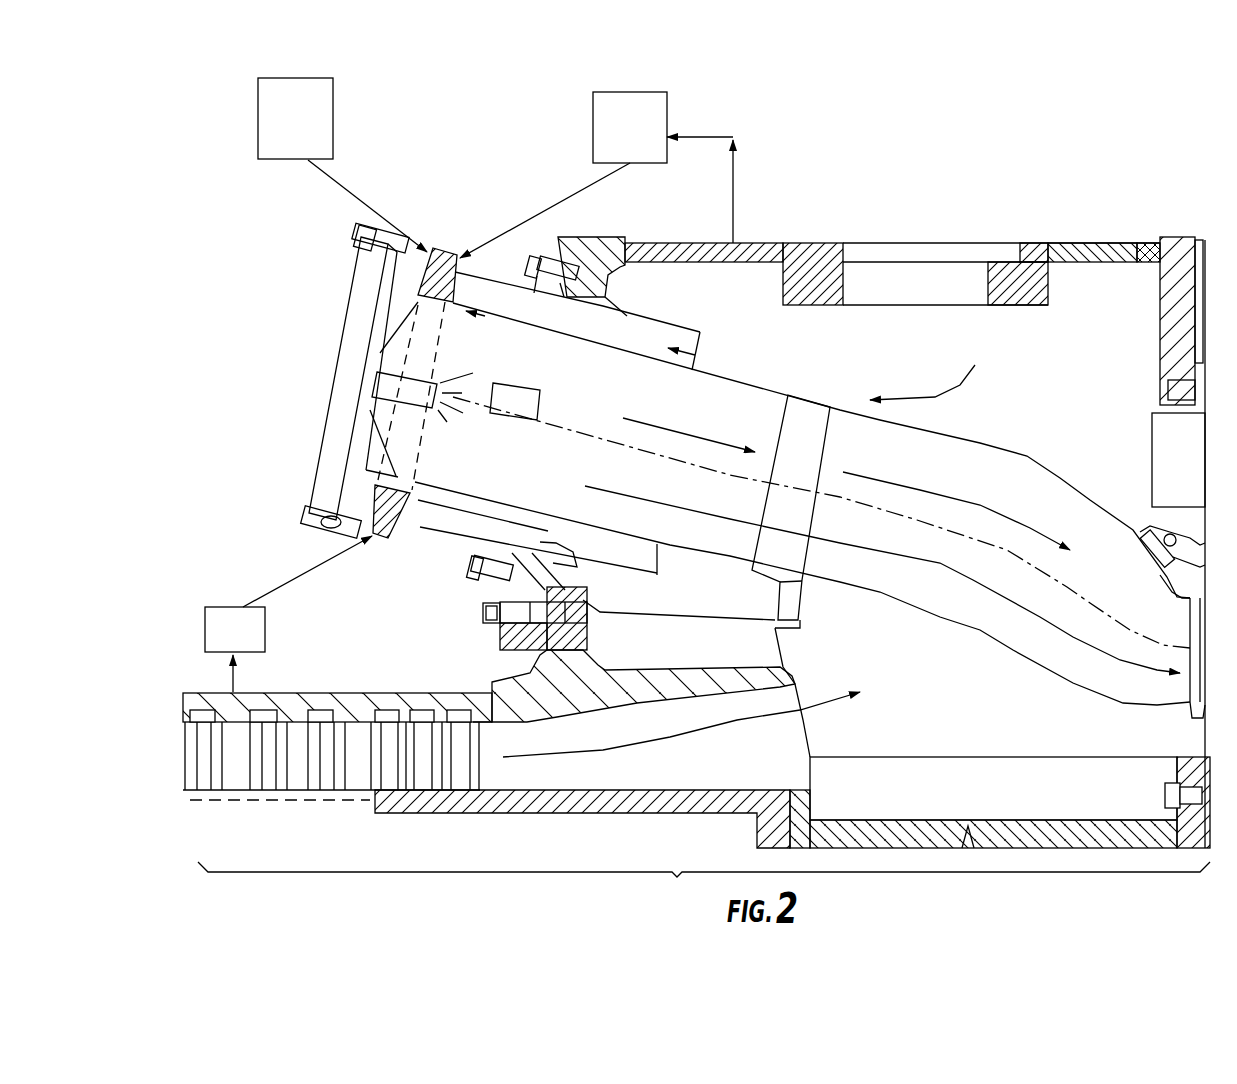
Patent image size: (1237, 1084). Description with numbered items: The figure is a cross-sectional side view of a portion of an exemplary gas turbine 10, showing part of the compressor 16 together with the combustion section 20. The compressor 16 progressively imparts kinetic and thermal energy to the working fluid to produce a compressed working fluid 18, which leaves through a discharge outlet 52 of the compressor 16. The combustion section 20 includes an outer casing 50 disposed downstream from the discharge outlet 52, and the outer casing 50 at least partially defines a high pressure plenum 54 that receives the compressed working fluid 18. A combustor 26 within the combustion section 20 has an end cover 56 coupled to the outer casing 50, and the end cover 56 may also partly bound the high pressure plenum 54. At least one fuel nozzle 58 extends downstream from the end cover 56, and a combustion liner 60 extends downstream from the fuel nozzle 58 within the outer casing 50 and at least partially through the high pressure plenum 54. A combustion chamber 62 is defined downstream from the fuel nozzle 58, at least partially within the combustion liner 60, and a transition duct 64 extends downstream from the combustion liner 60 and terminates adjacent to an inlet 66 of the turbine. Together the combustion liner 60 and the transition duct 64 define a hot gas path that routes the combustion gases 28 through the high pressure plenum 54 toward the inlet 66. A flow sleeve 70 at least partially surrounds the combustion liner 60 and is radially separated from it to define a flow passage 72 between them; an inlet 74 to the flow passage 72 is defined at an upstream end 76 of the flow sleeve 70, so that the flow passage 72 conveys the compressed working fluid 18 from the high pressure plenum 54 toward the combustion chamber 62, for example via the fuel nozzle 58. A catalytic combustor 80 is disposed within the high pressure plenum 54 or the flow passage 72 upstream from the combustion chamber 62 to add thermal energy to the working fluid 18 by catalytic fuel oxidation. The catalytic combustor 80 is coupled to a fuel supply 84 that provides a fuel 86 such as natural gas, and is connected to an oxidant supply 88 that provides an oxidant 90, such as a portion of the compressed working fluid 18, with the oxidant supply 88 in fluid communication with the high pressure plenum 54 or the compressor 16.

The gas turbine 10 is at (704, 883).
The compressor 16 is at (486, 745).
The compressed working fluid 18 is at (728, 542).
The combustion section 20 is at (1080, 135).
The combustor 26 is at (329, 375).
The combustion gases 28 is at (821, 522).
The outer casing 50 is at (790, 450).
The discharge outlet 52 is at (837, 692).
The high pressure plenum 54 is at (1076, 375).
The end cover 56 is at (348, 380).
The fuel nozzle 58 is at (428, 396).
The combustion liner 60 is at (577, 337).
The combustion chamber 62 is at (503, 416).
The transition duct 64 is at (821, 450).
The inlet of the turbine 66 is at (802, 593).
The flow sleeve 70 is at (537, 557).
The flow passage 72 is at (644, 295).
The inlet to the flow passage 74 is at (682, 576).
The upstream end of the flow sleeve 76 is at (716, 336).
The catalytic combustor 80 is at (425, 402).
The fuel supply 84 is at (283, 126).
The fuel 86 is at (367, 196).
The oxidant supply 88 is at (620, 138).
The oxidant 90 is at (514, 414).